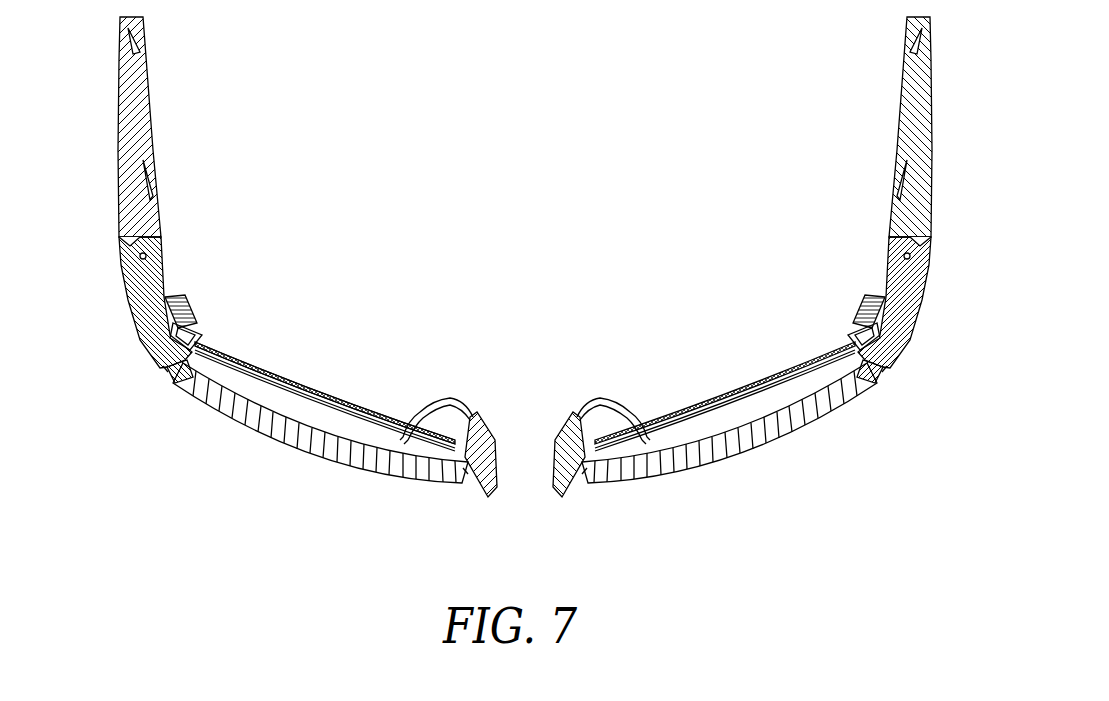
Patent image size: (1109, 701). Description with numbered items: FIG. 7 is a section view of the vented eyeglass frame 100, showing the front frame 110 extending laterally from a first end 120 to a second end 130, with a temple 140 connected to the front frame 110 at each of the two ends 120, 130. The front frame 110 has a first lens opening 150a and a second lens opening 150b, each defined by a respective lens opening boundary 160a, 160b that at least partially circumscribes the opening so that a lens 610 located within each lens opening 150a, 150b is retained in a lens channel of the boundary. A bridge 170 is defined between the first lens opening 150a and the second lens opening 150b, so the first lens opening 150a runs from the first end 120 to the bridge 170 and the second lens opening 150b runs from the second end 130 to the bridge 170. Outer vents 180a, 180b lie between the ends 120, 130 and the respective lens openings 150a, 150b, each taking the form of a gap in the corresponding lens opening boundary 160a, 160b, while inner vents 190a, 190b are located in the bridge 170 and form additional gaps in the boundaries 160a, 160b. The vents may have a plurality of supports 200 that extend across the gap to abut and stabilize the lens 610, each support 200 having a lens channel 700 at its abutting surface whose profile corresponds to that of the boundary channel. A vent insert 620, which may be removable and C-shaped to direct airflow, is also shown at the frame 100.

The eyeglass frame 100 is at (181, 504).
The front frame 110 is at (352, 412).
The first end 120 is at (150, 365).
The second end 130 is at (895, 370).
The temple 140 is at (122, 110).
The first lens opening 150a is at (290, 472).
The second lens opening 150b is at (745, 460).
The first lens opening boundary 160a is at (283, 398).
The second lens opening boundary 160b is at (720, 413).
The bridge 170 is at (492, 430).
The first outer vent 180a is at (222, 375).
The second outer vent 180b is at (817, 380).
The first inner vent 190a is at (417, 450).
The second inner vent 190b is at (628, 447).
The support 200 is at (185, 383).
The lens 610 is at (394, 468).
The vent insert 620 is at (175, 300).
The lens channel 700 is at (165, 370).